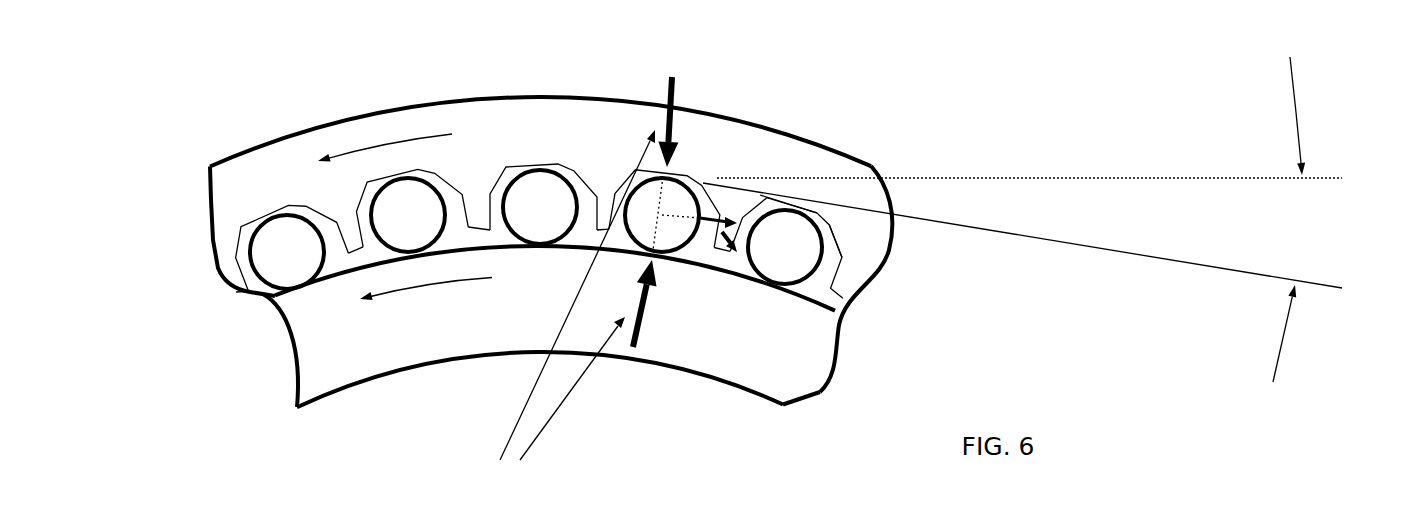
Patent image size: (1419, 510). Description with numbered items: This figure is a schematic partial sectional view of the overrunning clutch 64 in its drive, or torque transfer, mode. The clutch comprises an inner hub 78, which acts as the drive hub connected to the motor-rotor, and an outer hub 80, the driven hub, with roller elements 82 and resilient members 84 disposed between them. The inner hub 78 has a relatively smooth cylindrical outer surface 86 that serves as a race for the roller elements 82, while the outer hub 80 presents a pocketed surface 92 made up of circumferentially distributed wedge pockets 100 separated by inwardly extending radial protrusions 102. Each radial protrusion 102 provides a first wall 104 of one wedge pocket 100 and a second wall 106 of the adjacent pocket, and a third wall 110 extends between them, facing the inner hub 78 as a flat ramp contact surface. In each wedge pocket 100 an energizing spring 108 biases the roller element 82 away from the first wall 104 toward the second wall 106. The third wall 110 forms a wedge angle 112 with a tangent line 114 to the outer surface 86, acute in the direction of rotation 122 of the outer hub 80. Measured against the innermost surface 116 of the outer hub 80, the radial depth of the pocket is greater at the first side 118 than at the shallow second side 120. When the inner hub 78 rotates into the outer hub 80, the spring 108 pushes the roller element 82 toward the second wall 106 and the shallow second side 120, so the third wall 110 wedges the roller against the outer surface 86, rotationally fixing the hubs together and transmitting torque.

The overrunning clutch 64 is at (254, 110).
The inner hub 78 is at (323, 347).
The outer hub 80 is at (292, 168).
The roller elements 82 is at (542, 180).
The resilient members 84 is at (587, 193).
The outer surface 86 is at (470, 237).
The pocketed surface 92 is at (398, 178).
The wedge pockets 100 is at (697, 180).
The radial protrusions 102 is at (737, 233).
The first wall 104 is at (847, 267).
The second wall 106 is at (743, 225).
The energizing spring 108 is at (588, 205).
The third wall 110 is at (797, 207).
The wedge angle 112 is at (1056, 153).
The tangent line 114 is at (1200, 262).
The innermost surface 116 is at (357, 253).
The first side 118 is at (312, 220).
The second side 120 is at (243, 255).
The direction of rotation 122 is at (367, 148).